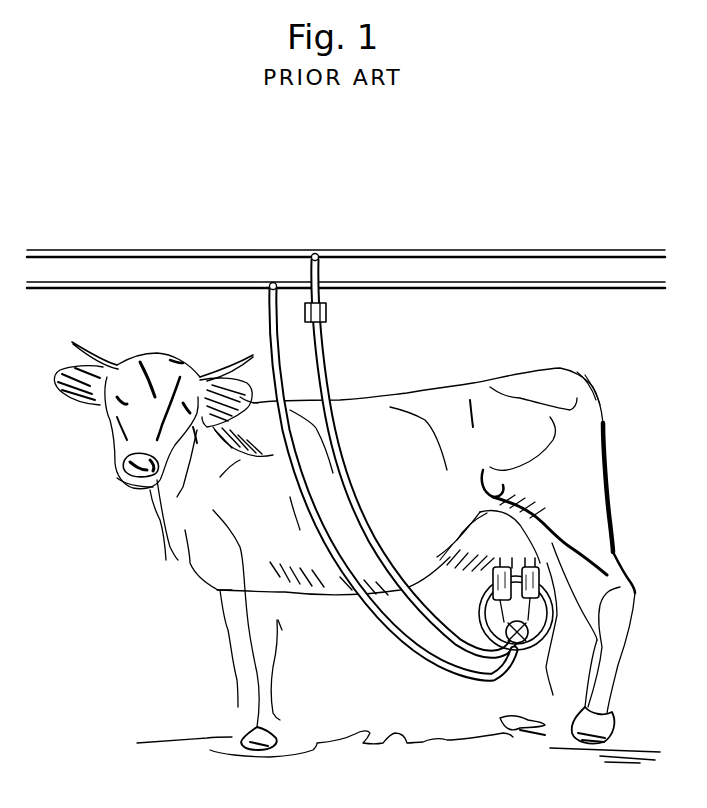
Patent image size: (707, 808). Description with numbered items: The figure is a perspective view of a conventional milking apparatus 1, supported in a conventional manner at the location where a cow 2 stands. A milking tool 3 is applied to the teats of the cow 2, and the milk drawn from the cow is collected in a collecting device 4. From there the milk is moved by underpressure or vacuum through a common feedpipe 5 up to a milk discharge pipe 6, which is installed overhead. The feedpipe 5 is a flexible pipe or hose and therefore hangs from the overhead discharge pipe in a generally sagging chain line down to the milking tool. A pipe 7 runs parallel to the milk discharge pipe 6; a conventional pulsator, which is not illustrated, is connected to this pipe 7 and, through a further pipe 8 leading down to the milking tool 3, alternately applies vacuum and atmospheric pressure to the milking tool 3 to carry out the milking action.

The milking apparatus 1 is at (375, 370).
The cow 2 is at (500, 430).
The milking tool 3 is at (562, 631).
The collecting device 4 is at (520, 636).
The feedpipe 5 is at (394, 624).
The milk discharge pipe 6 is at (127, 284).
The pipe 7 is at (218, 252).
The further pipe 8 is at (326, 360).